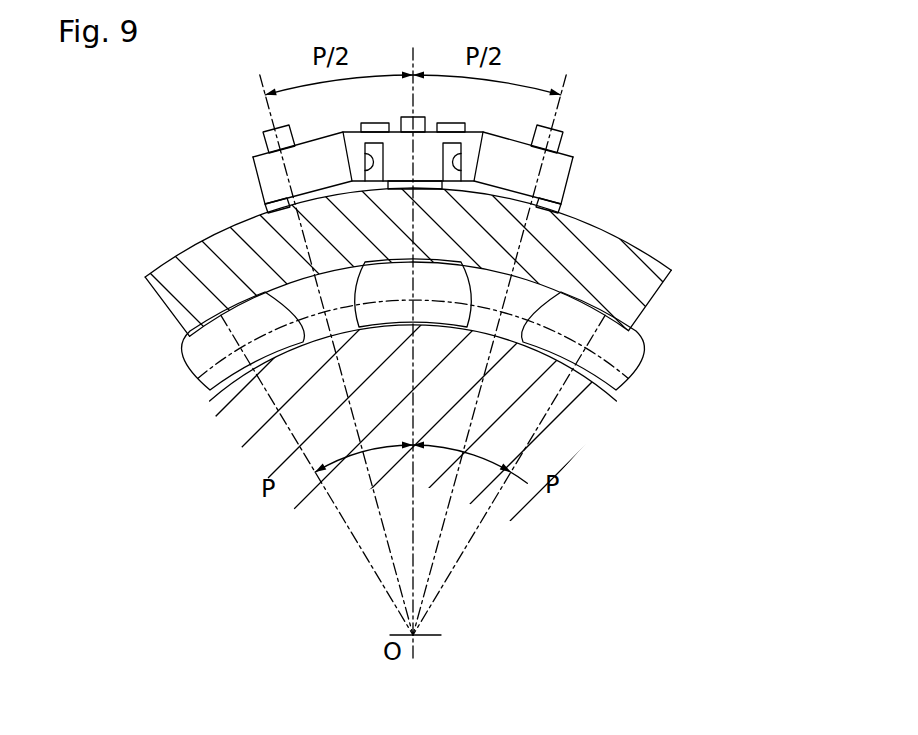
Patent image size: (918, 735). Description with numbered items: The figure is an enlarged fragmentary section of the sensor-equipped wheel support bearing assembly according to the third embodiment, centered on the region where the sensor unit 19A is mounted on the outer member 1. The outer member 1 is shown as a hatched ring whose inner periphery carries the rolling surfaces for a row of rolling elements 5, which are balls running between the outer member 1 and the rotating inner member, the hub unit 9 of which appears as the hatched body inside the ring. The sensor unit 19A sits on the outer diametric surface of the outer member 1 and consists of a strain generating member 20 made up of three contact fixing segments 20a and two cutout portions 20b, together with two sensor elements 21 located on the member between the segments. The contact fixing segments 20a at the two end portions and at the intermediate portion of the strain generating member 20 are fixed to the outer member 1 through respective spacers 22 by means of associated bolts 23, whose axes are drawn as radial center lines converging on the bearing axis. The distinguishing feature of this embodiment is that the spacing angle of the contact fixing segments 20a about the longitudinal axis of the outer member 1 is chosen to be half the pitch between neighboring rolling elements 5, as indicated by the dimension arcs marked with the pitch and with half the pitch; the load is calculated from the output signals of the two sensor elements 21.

The outer member 1 is at (653, 252).
The rolling elements 5 is at (187, 332).
The hub unit 9 is at (613, 413).
The sensor unit 19A is at (629, 105).
The strain generating member 20 is at (316, 140).
The contact fixing segments 20a is at (266, 188).
The cutout portions 20b is at (372, 162).
The sensor elements 21 is at (385, 123).
The spacers 22 is at (265, 212).
The bolts 23 is at (267, 132).